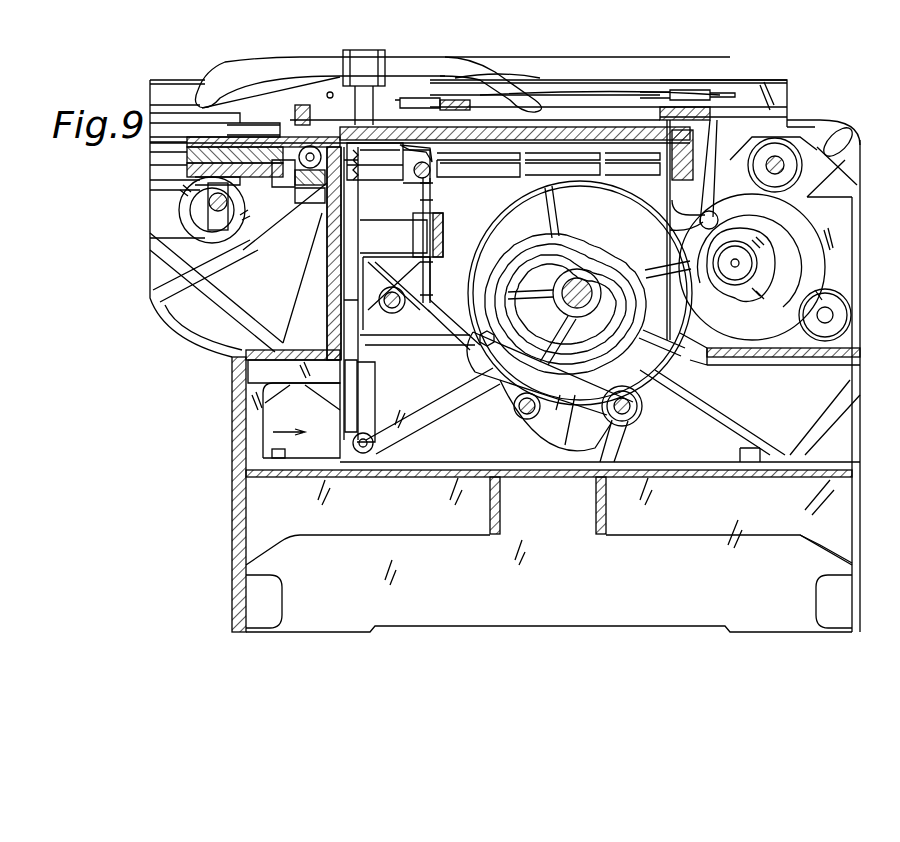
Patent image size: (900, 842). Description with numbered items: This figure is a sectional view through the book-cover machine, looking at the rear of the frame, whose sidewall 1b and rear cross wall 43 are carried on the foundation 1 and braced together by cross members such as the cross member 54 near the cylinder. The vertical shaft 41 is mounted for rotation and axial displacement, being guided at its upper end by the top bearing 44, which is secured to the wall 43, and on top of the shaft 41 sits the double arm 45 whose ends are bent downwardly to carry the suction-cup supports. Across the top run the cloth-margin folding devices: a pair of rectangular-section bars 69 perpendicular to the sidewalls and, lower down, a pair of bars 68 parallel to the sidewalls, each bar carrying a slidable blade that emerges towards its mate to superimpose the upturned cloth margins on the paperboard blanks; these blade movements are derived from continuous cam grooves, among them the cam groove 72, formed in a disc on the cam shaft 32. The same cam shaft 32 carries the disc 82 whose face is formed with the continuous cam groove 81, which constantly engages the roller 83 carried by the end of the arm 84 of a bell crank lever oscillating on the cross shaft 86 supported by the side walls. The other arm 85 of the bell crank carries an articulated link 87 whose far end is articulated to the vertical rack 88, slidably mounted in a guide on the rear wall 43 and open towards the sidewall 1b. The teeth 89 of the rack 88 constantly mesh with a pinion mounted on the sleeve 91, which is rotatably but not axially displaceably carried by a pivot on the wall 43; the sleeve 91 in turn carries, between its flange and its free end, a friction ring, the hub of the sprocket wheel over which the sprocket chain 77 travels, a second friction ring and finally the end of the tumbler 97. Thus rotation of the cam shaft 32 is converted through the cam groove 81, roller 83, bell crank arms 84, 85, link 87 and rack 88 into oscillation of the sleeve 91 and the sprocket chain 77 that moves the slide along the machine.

The foundation 1 is at (232, 560).
The sidewall 1b is at (840, 506).
The cam shaft 32 is at (556, 302).
The shaft 41 is at (355, 100).
The cross wall 43 is at (335, 320).
The top bearing 44 is at (388, 180).
The double arm 45 is at (275, 62).
The cross member 54 is at (695, 162).
The bars 68 is at (585, 133).
The bars 69 is at (490, 66).
The cam groove 72 is at (432, 282).
The sprocket chain 77 is at (428, 318).
The cam groove 81 is at (593, 254).
The disc 82 is at (655, 392).
The roller 83 is at (496, 345).
The arm 84 is at (582, 395).
The arm 85 is at (638, 412).
The cross shaft 86 is at (450, 385).
The link 87 is at (372, 378).
The rack 88 is at (340, 290).
The teeth 89 is at (340, 425).
The sleeve 91 is at (428, 202).
The tumbler 97 is at (443, 232).